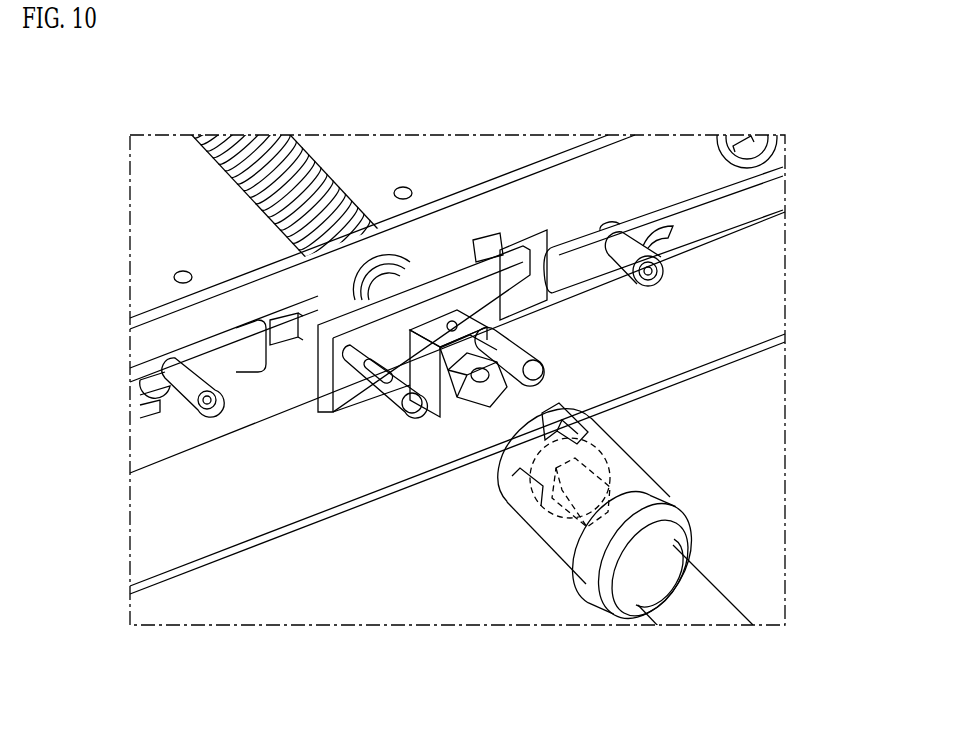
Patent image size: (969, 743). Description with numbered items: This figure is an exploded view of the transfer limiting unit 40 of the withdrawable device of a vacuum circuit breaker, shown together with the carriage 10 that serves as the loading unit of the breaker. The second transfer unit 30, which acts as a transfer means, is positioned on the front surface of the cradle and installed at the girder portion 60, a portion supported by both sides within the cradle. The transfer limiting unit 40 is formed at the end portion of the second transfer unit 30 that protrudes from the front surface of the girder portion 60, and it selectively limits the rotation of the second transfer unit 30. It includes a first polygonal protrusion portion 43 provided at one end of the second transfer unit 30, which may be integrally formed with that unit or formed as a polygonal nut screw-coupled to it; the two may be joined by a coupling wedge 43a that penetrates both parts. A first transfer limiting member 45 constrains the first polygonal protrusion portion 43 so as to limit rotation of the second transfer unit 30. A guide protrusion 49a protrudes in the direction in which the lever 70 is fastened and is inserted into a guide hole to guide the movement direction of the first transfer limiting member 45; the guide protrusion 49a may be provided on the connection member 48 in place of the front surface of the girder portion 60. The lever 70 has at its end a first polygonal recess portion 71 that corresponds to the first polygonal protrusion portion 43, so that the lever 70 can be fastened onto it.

The carriage 10 is at (143, 226).
The second transfer unit 30 is at (328, 165).
The transfer limiting unit 40 is at (447, 430).
The first polygonal protrusion portion 43 is at (455, 324).
The coupling wedge 43a is at (527, 272).
The first transfer limiting member 45 is at (360, 378).
The connection member 48 is at (330, 412).
The guide protrusion 49a is at (548, 364).
The girder portion 60 is at (180, 404).
The lever 70 is at (712, 565).
The first polygonal recess portion 71 is at (595, 462).